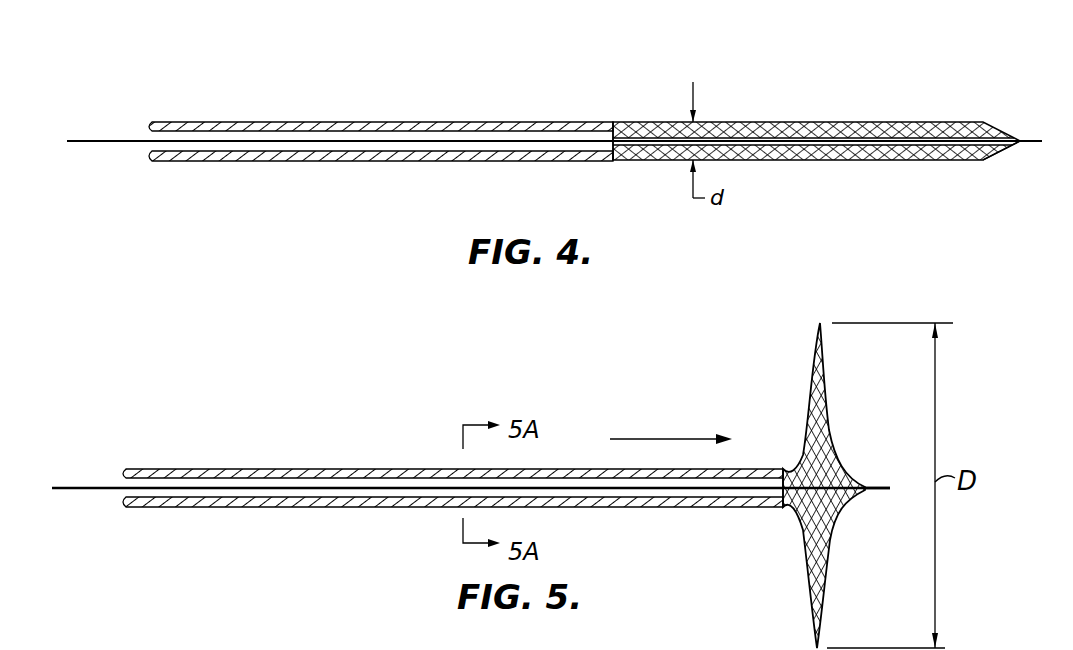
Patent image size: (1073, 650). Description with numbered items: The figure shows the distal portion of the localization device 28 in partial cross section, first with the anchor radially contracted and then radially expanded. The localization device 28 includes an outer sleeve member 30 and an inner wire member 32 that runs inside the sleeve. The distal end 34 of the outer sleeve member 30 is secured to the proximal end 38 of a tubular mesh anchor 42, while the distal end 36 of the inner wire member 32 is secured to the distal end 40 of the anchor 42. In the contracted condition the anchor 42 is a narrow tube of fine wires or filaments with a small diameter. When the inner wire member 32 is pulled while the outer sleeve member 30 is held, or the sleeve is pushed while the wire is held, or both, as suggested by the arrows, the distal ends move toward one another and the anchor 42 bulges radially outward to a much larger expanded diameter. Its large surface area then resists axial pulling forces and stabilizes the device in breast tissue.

In FIG. 4, the localization device 28 is at (766, 44).
In FIG. 4, the outer sleeve member 30 is at (325, 121).
In FIG. 5, the outer sleeve member 30 is at (233, 510).
In FIG. 4, the inner wire member 32 is at (113, 142).
In FIG. 5, the inner wire member 32 is at (87, 488).
In FIG. 4, the distal end of outer sleeve member 34 is at (607, 121).
In FIG. 4, the distal end of inner wire member 36 is at (1037, 139).
In FIG. 5, the distal end of inner wire member 36 is at (880, 492).
In FIG. 4, the proximal end of tubular mesh anchor 38 is at (630, 160).
In FIG. 4, the distal end of tubular mesh anchor 40 is at (1000, 152).
In FIG. 4, the tubular mesh anchor 42 is at (740, 122).
In FIG. 5, the tubular mesh anchor 42 is at (829, 402).